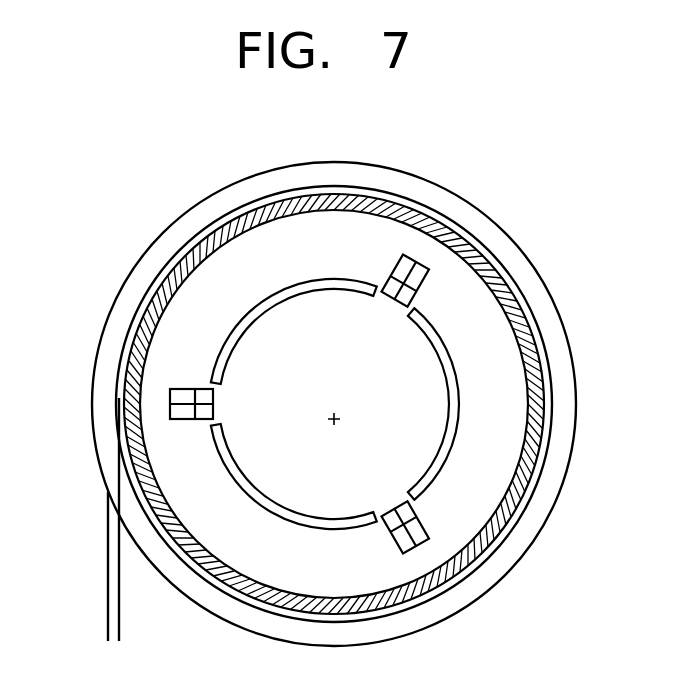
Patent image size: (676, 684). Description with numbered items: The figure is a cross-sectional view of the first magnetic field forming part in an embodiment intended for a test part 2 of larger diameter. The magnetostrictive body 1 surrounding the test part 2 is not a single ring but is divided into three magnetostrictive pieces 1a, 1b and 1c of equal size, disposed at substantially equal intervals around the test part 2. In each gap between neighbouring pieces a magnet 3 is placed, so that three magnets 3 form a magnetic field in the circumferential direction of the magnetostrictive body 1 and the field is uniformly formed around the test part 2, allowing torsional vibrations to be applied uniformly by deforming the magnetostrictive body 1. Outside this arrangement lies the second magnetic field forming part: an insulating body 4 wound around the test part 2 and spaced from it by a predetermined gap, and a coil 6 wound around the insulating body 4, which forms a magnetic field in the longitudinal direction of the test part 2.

The magnetostrictive body 1 is at (335, 404).
The magnetostrictive piece 1a is at (327, 339).
The magnetostrictive piece 1b is at (225, 438).
The magnetostrictive piece 1c is at (418, 313).
The test part 2 is at (430, 378).
The magnet 3 is at (170, 396).
The insulating body 4 is at (530, 272).
The coil 6 is at (488, 258).